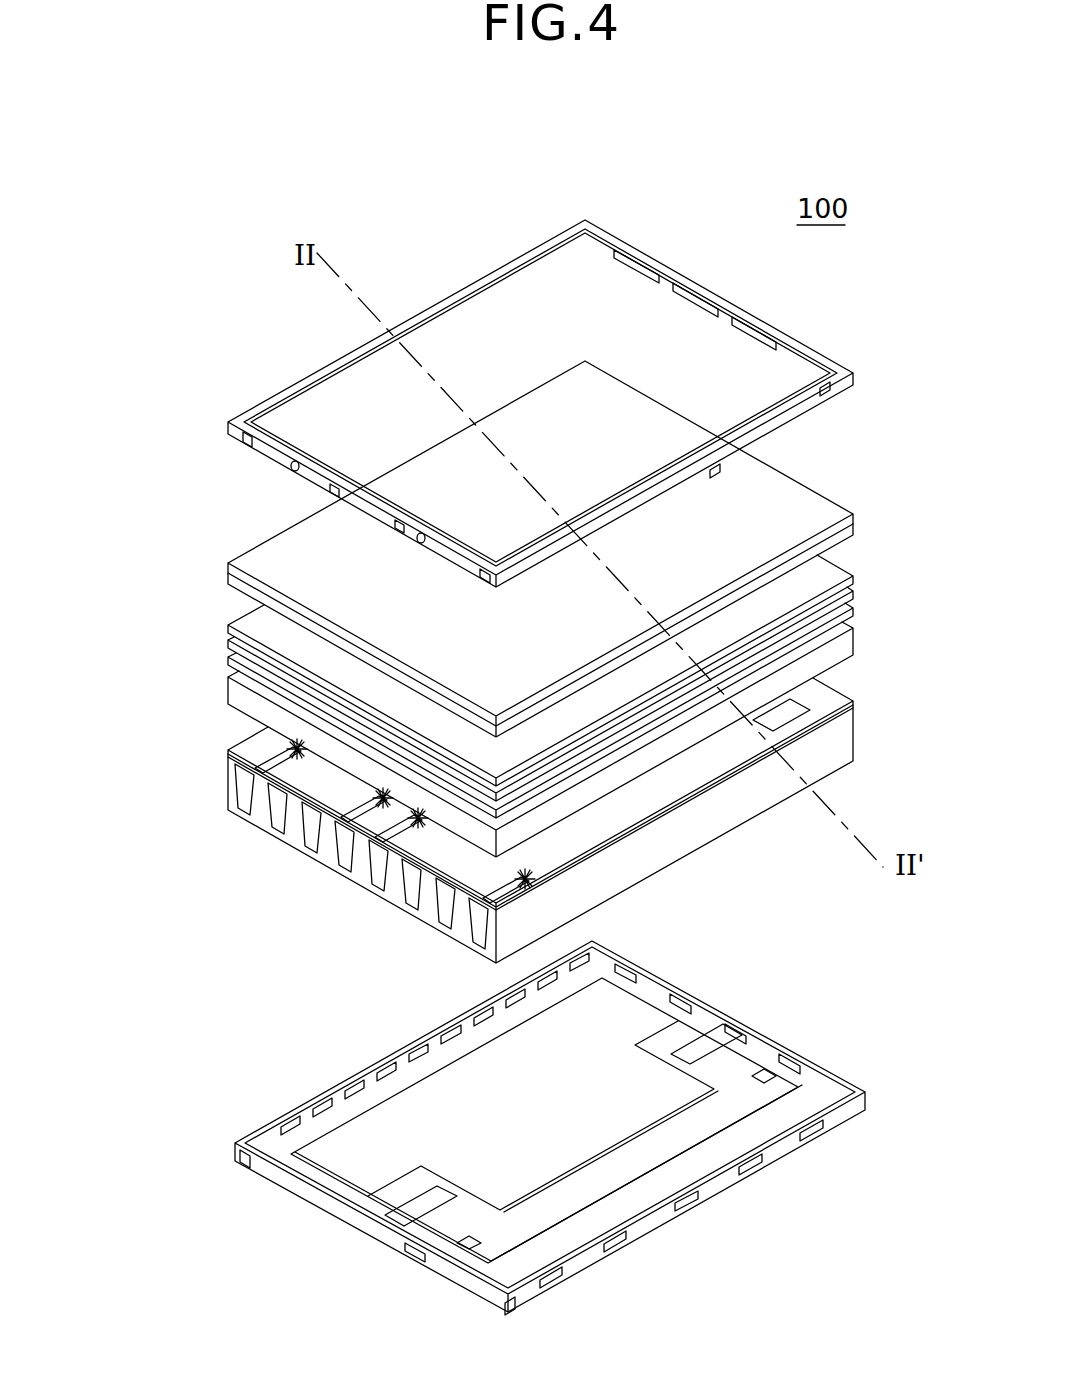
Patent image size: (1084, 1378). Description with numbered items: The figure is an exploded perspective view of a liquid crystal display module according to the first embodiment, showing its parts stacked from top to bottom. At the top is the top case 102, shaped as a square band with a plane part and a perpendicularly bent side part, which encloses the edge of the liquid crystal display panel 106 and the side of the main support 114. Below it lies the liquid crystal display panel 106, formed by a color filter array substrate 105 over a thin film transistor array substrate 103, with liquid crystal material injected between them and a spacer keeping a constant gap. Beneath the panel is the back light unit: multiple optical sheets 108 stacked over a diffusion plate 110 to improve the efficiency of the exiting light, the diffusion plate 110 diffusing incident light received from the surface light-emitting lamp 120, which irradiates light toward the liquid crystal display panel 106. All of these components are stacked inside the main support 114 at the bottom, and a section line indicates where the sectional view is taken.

The top case 102 is at (836, 362).
The thin film transistor array substrate 103 is at (228, 580).
The color filter array substrate 105 is at (228, 564).
The liquid crystal display panel 106 is at (450, 549).
The optical sheets 108 is at (857, 613).
The diffusion plate 110 is at (853, 650).
The main support 114 is at (793, 1047).
The surface light-emitting lamp 120 is at (227, 778).